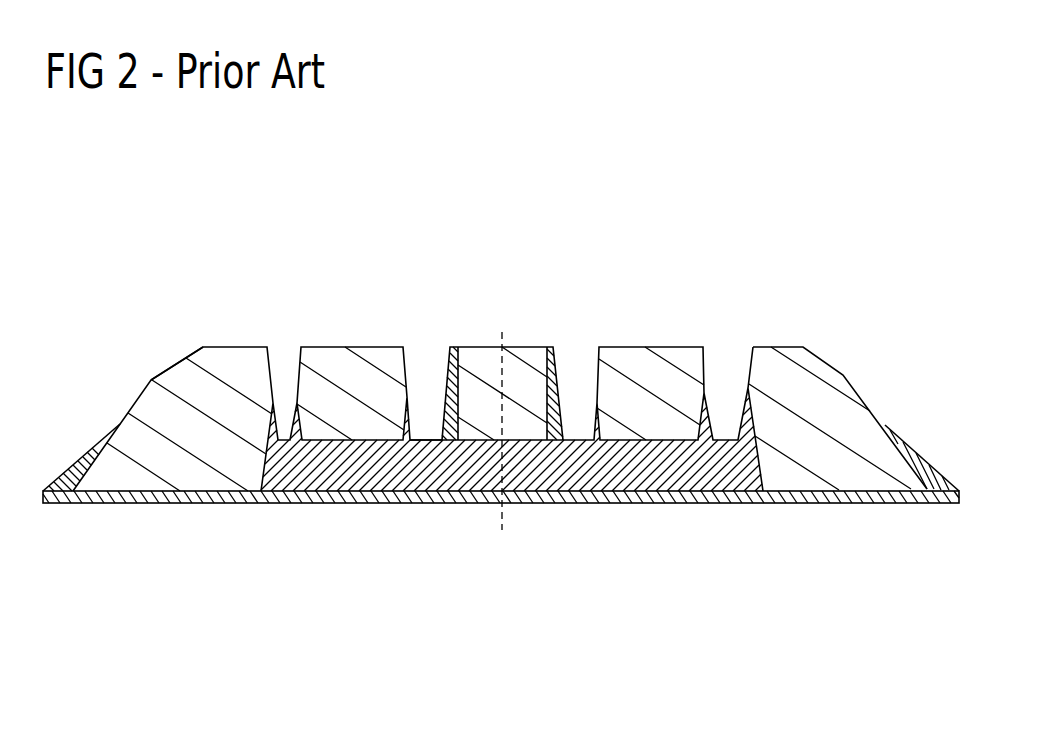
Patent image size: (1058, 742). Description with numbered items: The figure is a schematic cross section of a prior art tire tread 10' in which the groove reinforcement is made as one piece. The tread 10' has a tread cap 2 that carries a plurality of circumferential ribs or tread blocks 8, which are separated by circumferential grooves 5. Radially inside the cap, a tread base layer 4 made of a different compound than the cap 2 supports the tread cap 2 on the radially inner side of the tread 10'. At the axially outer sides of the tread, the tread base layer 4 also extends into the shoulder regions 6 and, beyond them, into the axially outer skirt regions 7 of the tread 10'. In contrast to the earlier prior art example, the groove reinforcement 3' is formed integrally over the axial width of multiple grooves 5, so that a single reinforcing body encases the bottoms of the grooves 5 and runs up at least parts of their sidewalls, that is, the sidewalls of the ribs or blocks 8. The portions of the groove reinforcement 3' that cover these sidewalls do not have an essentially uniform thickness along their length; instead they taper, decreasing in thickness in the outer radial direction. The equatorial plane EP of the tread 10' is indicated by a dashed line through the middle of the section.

The tread cap 2 is at (230, 362).
The tread blocks 8 is at (336, 362).
The tread 10' is at (502, 339).
The circumferential grooves 5 is at (423, 440).
The groove reinforcement 3' is at (507, 487).
The tread base layer 4 is at (865, 503).
The shoulder regions 6 is at (142, 380).
The skirt regions 7 is at (78, 450).
The equatorial plane EP is at (502, 448).